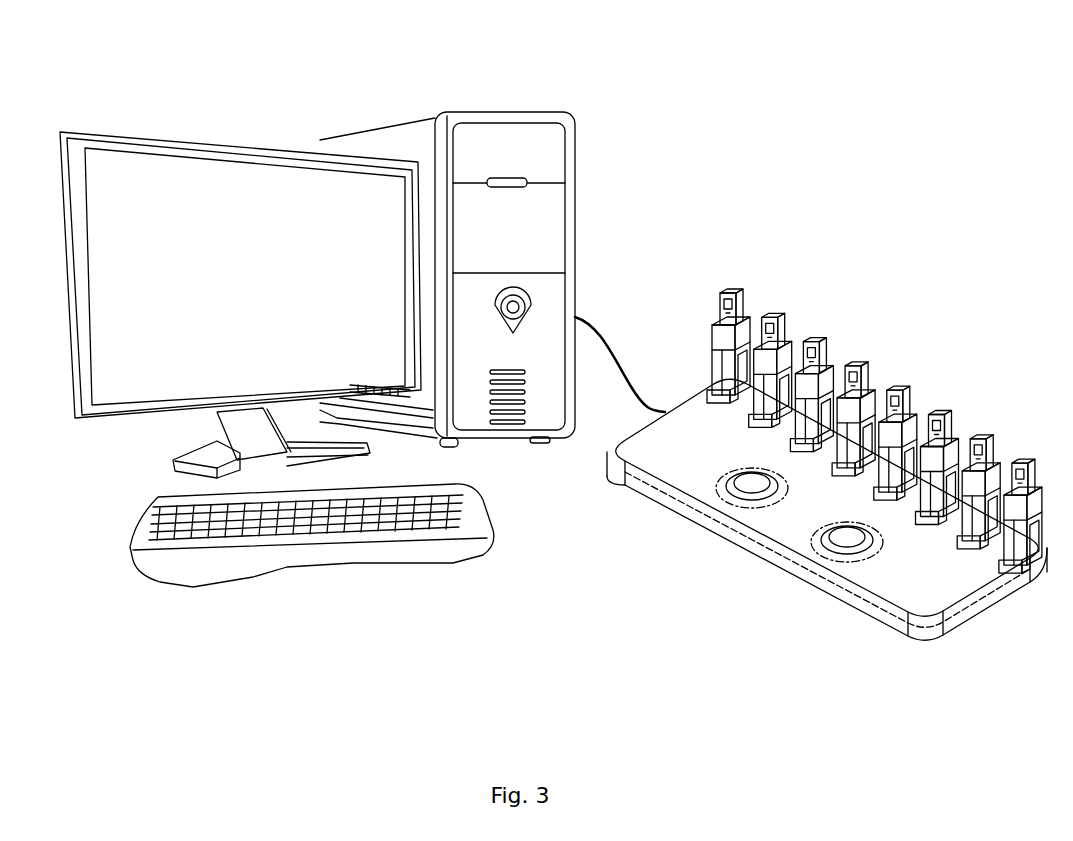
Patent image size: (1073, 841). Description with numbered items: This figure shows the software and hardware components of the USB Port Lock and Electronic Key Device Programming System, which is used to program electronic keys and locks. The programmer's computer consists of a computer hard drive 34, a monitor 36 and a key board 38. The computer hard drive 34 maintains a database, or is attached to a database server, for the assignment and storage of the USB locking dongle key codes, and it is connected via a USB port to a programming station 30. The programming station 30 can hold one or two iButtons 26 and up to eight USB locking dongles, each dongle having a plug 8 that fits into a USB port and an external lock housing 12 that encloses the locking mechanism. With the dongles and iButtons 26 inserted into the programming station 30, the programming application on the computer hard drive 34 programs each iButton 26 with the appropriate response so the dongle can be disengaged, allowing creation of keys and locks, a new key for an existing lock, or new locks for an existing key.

The plug 8 is at (950, 416).
The external lock housing 12 is at (982, 490).
The iButton 26 is at (747, 483).
The programming station 30 is at (927, 597).
The computer hard drive 34 is at (488, 108).
The monitor 36 is at (180, 113).
The key board 38 is at (153, 547).